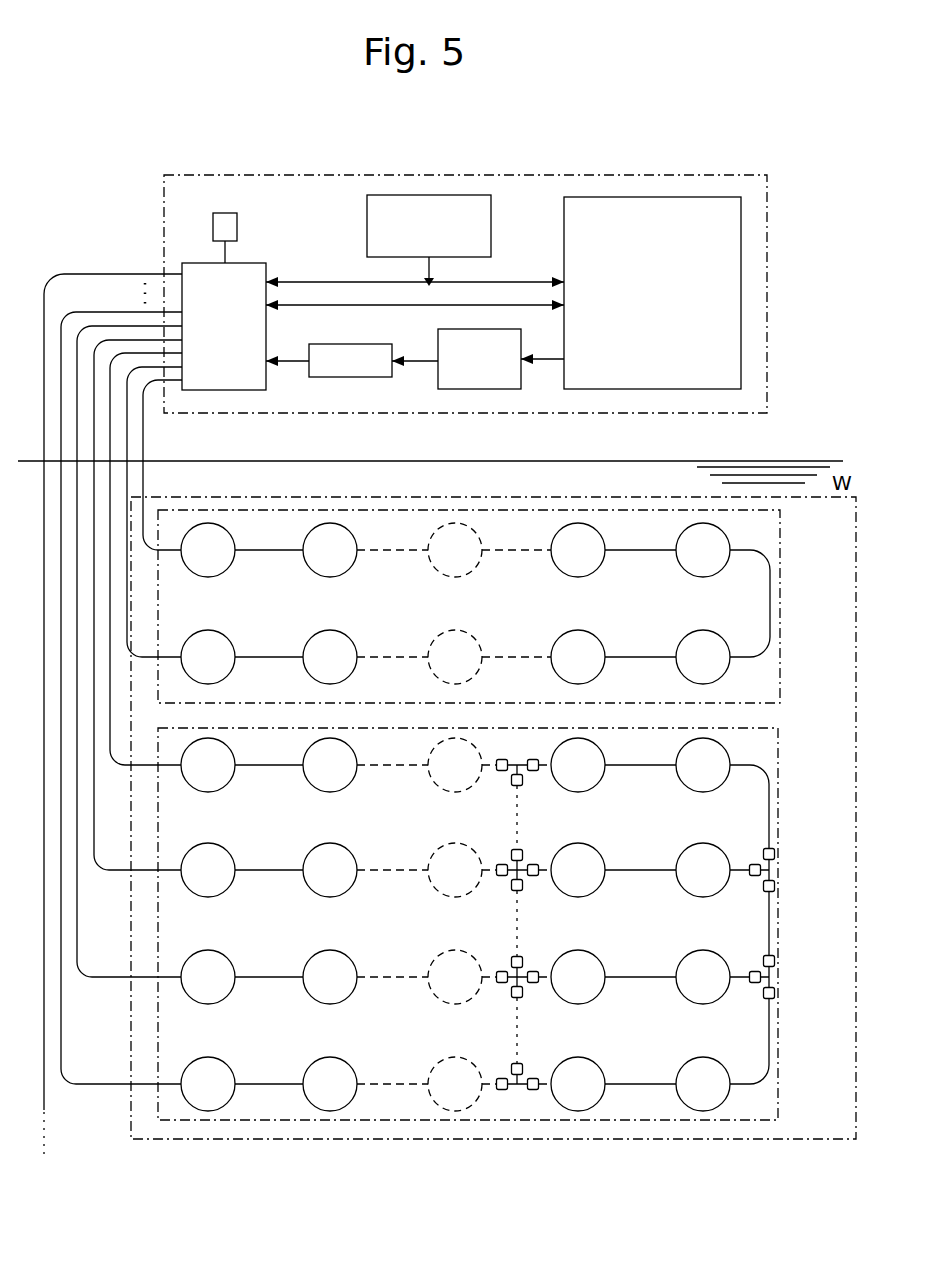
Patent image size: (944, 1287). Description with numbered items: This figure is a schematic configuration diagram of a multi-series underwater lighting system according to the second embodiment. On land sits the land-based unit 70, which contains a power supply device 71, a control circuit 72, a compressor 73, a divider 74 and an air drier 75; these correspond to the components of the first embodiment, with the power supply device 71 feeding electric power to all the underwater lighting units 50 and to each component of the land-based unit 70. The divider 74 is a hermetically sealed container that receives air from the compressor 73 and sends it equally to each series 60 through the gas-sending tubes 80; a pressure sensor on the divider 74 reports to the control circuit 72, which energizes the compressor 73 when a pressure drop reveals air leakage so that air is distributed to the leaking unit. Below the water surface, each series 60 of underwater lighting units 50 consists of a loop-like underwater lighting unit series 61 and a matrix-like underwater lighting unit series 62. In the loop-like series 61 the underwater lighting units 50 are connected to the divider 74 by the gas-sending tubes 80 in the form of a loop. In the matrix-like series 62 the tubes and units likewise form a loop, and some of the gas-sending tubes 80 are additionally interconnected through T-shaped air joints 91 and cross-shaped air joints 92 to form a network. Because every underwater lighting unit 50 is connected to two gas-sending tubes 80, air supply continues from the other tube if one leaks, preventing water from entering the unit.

The underwater lighting unit 50 is at (208, 524).
The series 60 is at (492, 1140).
The loop-like underwater lighting unit series 61 is at (780, 605).
The matrix-like underwater lighting unit series 62 is at (778, 923).
The land-based unit 70 is at (327, 175).
The power supply device 71 is at (433, 195).
The control circuit 72 is at (655, 197).
The compressor 73 is at (478, 389).
The divider 74 is at (222, 390).
The air drier 75 is at (355, 377).
The gas-sending tube 80 is at (100, 272).
The T-shaped air joint 91 is at (535, 770).
The cross-shaped air joint 92 is at (535, 877).